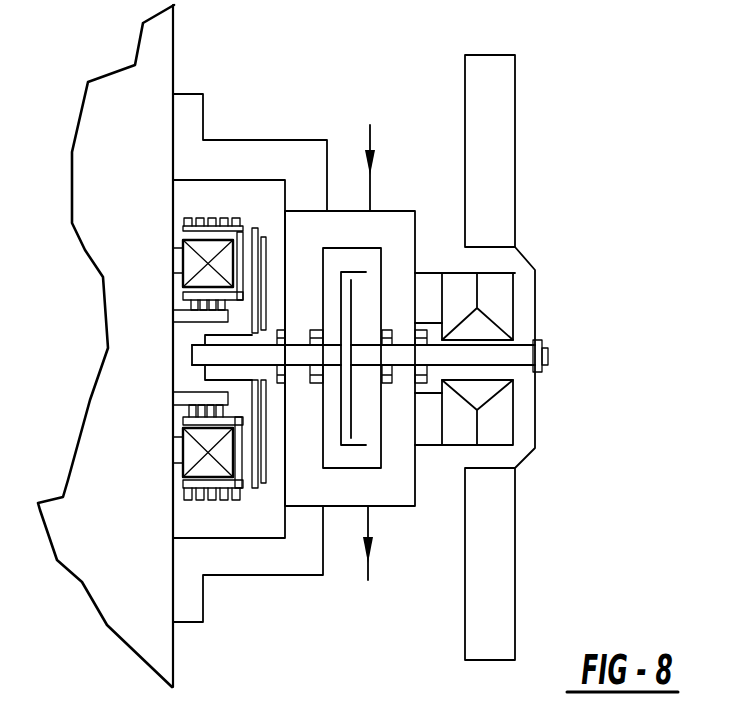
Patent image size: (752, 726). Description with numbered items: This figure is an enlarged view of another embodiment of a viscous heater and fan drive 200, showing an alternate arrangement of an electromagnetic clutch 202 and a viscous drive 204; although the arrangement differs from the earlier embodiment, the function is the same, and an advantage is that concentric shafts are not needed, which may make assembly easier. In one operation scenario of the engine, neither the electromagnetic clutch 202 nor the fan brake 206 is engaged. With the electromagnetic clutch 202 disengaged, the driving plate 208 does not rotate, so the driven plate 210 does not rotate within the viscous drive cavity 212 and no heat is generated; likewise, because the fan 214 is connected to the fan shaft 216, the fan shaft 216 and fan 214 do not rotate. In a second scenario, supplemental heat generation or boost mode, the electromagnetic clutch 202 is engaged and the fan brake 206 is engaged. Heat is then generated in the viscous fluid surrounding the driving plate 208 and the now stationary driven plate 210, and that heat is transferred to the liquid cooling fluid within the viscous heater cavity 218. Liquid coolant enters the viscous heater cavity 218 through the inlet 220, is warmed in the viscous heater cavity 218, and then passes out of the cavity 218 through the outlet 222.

The viscous heater and fan drive 200 is at (258, 80).
The electromagnetic clutch 202 is at (150, 213).
The viscous drive 204 is at (393, 228).
The fan brake 206 is at (515, 307).
The driving plate 208 is at (328, 607).
The driven plate 210 is at (555, 512).
The viscous drive cavity 212 is at (337, 133).
The fan 214 is at (590, 78).
The fan shaft 216 is at (603, 420).
The viscous heater cavity 218 is at (252, 645).
The inlet 220 is at (370, 125).
The outlet 222 is at (398, 635).